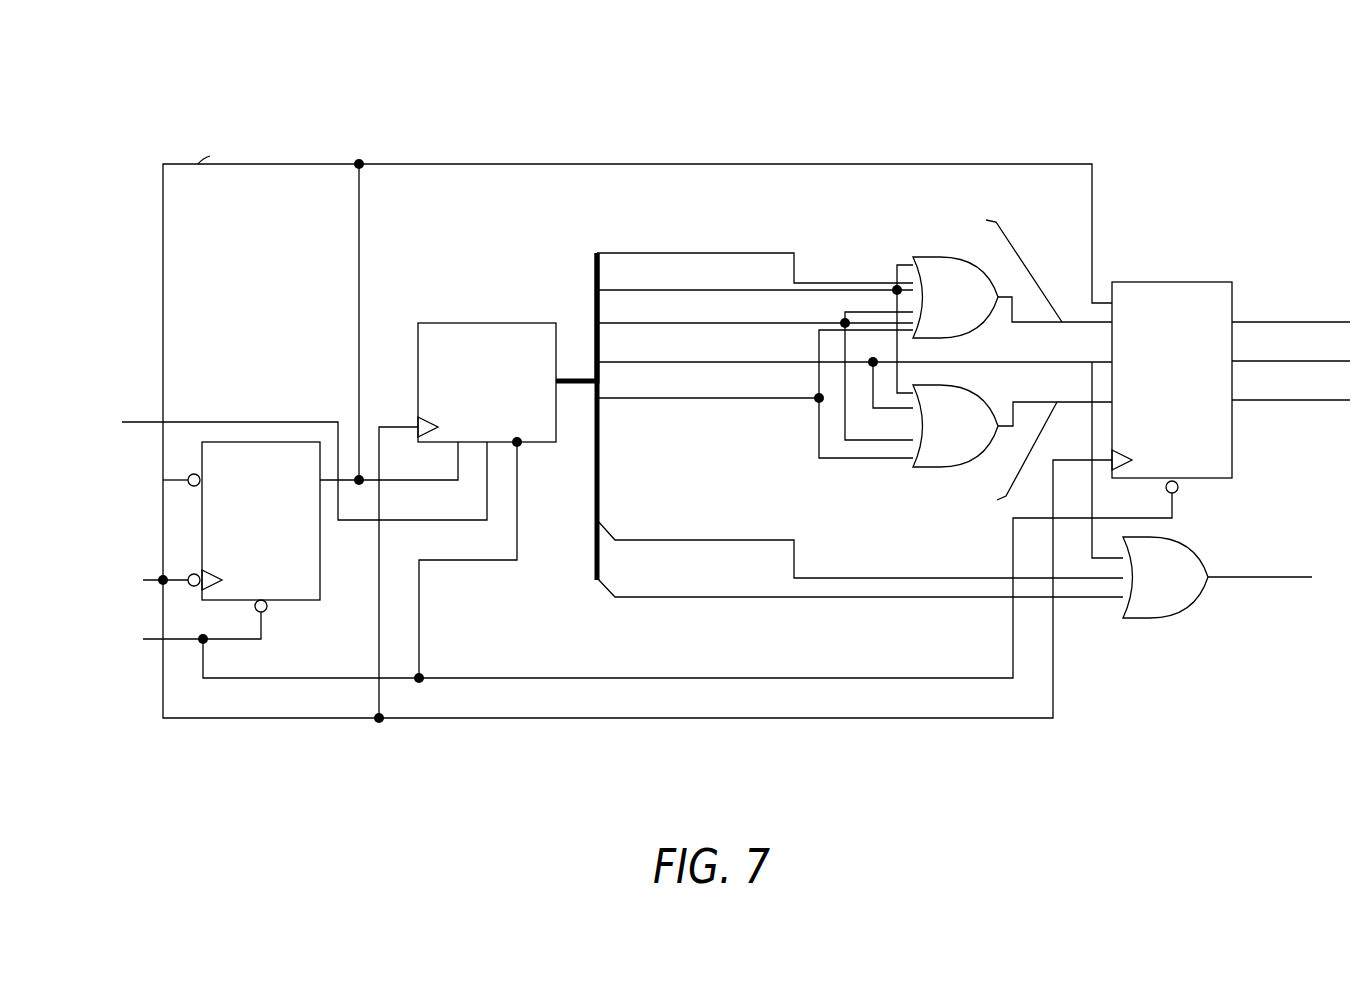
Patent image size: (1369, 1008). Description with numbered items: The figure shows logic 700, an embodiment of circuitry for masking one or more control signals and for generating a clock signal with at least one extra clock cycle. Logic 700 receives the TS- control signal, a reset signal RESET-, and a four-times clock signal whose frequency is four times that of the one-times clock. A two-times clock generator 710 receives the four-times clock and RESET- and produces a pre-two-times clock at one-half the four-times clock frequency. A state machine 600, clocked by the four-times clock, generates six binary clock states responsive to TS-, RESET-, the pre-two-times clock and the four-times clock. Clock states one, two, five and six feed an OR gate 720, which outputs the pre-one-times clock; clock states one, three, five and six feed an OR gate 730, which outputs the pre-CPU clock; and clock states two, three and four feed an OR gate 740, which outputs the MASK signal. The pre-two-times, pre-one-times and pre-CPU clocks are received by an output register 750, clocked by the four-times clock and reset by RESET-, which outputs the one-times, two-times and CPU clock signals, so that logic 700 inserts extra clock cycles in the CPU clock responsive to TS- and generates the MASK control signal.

The logic 700 is at (178, 85).
The 2X_CLK generator 710 is at (240, 563).
The state machine 600 is at (466, 428).
The OR gate 720 is at (936, 312).
The OR gate 730 is at (936, 441).
The OR gate 740 is at (1146, 592).
The output register 750 is at (1151, 429).